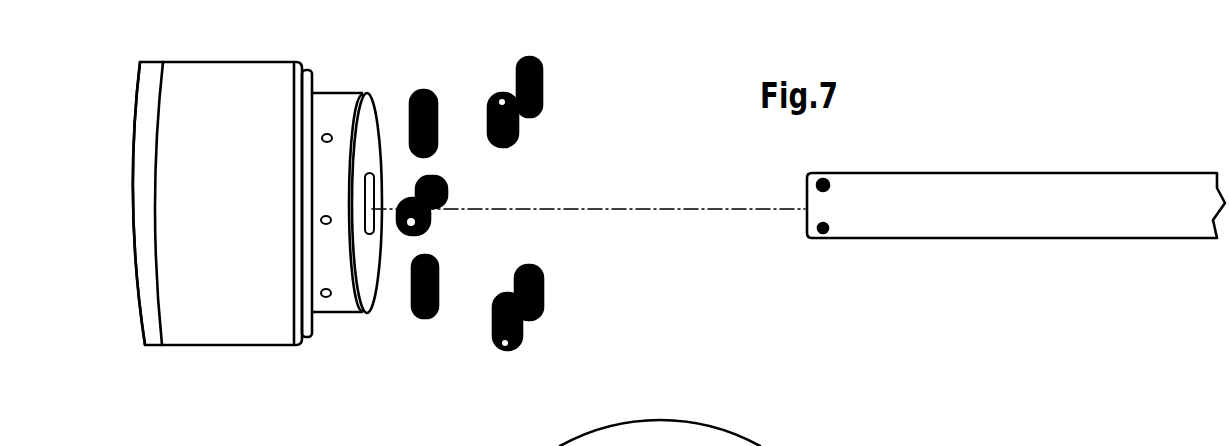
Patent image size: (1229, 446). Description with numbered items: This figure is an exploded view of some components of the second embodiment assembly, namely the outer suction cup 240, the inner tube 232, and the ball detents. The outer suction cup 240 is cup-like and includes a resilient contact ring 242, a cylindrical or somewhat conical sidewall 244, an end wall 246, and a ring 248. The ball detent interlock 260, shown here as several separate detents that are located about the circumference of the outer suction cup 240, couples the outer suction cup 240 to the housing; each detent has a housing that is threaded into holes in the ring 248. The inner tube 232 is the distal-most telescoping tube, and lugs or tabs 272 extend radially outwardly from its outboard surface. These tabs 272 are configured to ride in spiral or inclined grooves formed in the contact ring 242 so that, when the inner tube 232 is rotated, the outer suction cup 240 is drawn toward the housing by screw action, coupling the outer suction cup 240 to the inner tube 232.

The outer suction cup 240 is at (198, 312).
The resilient contact ring 242 is at (143, 170).
The sidewall 244 is at (207, 133).
The end wall 246 is at (316, 83).
The ring 248 is at (348, 113).
The ball detent interlock 260 is at (553, 76).
The inner tube 232 is at (990, 190).
The tabs 272 is at (822, 240).